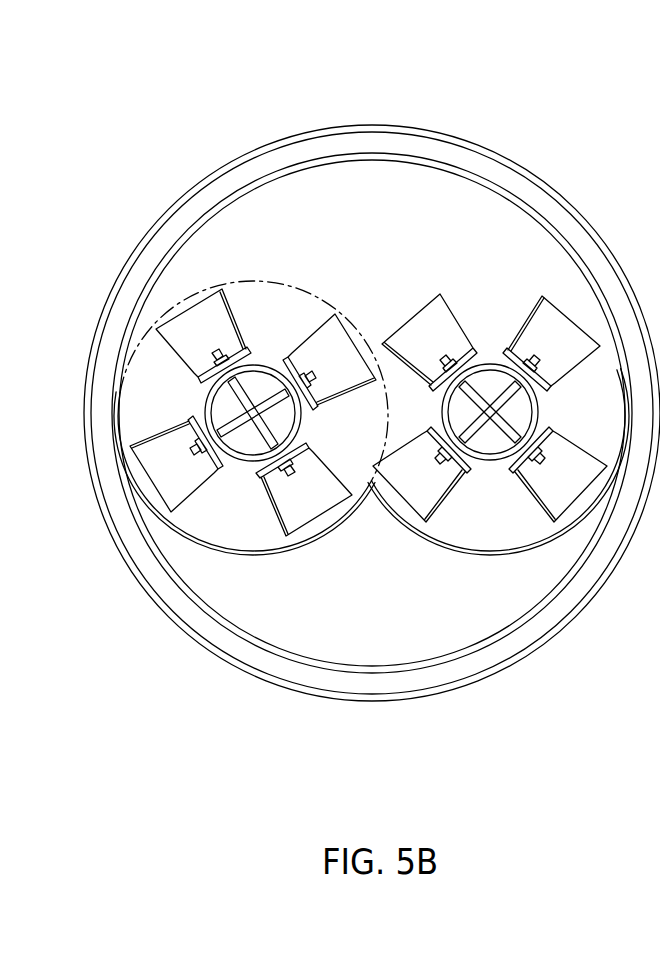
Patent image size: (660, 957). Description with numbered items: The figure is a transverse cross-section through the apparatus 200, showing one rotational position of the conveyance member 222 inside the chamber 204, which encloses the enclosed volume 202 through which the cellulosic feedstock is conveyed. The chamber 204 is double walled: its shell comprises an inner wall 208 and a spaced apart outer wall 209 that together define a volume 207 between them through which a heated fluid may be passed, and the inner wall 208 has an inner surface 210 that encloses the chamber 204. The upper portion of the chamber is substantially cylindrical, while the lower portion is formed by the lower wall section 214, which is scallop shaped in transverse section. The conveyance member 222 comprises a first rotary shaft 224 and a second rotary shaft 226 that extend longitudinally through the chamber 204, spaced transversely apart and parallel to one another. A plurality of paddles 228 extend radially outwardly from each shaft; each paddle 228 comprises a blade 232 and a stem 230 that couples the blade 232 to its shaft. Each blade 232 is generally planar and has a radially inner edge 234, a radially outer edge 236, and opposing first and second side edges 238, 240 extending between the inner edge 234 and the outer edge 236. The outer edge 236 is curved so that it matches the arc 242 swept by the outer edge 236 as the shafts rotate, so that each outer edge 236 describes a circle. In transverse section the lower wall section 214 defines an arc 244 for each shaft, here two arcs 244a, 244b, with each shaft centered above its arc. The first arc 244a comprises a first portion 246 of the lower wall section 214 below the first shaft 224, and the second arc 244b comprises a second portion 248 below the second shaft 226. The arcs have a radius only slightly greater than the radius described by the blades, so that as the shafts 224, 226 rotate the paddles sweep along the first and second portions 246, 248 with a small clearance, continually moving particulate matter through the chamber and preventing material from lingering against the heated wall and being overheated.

The apparatus 200 is at (573, 120).
The enclosed volume 202 is at (382, 226).
The chamber 204 is at (252, 213).
The volume 207 is at (262, 661).
The inner wall 208 is at (157, 275).
The outer wall 209 is at (430, 700).
The inner surface 210 is at (385, 163).
The lower wall section 214 is at (371, 484).
The conveyance member 222 is at (368, 303).
The first rotary shaft 224 is at (300, 437).
The second rotary shaft 226 is at (548, 413).
The paddle 228 is at (318, 327).
The stem 230 is at (215, 411).
The blade 232 is at (190, 337).
The radially inner edge 234 is at (508, 340).
The radially outer edge 236 is at (554, 300).
The first side edge 238 is at (527, 310).
The second side edge 240 is at (584, 358).
The arc 242 is at (325, 278).
The arc 244 is at (283, 282).
The first arc 244a is at (216, 543).
The second arc 244b is at (490, 546).
The first portion 246 is at (285, 546).
The second portion 248 is at (430, 532).